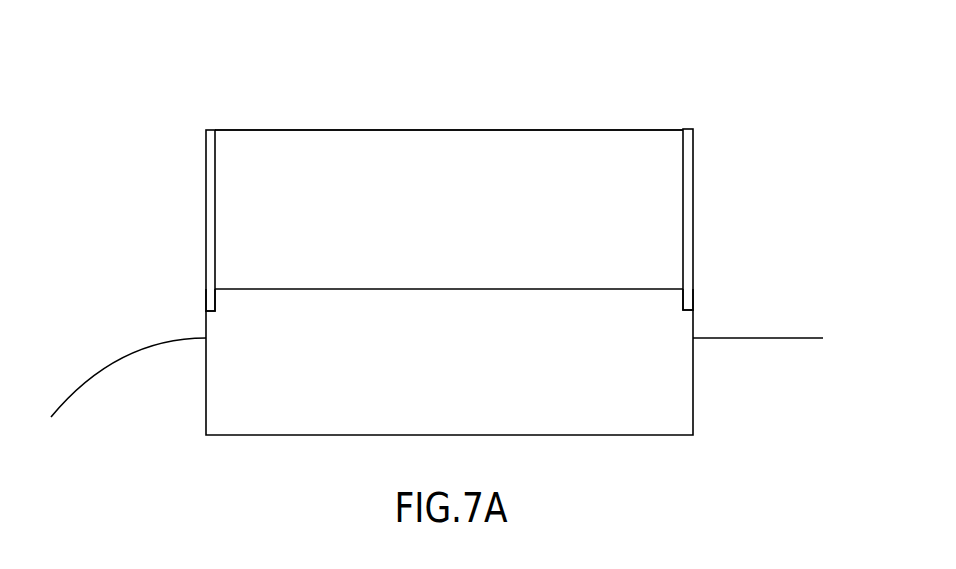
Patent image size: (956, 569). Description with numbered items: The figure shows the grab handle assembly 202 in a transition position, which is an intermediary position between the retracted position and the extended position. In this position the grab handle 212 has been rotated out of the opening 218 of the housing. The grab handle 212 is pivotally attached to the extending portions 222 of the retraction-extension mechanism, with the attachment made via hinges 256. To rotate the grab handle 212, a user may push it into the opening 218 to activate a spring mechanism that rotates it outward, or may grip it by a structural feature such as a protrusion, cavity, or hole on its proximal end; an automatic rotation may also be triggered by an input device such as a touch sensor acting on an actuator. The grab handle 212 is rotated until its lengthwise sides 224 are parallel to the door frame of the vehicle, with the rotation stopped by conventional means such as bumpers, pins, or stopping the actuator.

The grab handle assembly 202 is at (589, 92).
The opening 218 is at (329, 141).
The extending portions 222 is at (216, 159).
The hinges 256 is at (207, 292).
The lengthwise sides 224 is at (435, 371).
The grab handle 212 is at (693, 375).